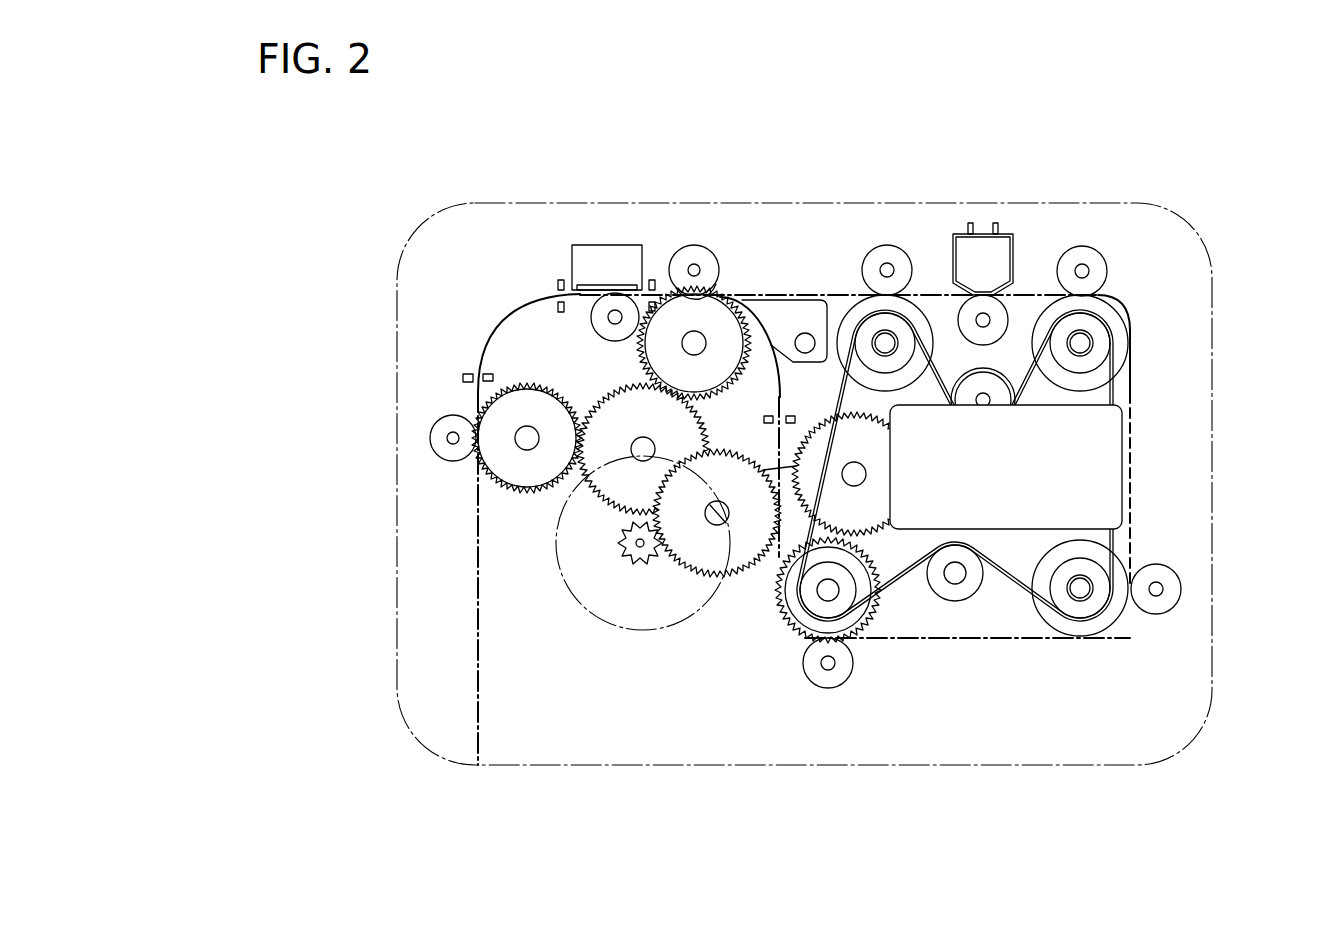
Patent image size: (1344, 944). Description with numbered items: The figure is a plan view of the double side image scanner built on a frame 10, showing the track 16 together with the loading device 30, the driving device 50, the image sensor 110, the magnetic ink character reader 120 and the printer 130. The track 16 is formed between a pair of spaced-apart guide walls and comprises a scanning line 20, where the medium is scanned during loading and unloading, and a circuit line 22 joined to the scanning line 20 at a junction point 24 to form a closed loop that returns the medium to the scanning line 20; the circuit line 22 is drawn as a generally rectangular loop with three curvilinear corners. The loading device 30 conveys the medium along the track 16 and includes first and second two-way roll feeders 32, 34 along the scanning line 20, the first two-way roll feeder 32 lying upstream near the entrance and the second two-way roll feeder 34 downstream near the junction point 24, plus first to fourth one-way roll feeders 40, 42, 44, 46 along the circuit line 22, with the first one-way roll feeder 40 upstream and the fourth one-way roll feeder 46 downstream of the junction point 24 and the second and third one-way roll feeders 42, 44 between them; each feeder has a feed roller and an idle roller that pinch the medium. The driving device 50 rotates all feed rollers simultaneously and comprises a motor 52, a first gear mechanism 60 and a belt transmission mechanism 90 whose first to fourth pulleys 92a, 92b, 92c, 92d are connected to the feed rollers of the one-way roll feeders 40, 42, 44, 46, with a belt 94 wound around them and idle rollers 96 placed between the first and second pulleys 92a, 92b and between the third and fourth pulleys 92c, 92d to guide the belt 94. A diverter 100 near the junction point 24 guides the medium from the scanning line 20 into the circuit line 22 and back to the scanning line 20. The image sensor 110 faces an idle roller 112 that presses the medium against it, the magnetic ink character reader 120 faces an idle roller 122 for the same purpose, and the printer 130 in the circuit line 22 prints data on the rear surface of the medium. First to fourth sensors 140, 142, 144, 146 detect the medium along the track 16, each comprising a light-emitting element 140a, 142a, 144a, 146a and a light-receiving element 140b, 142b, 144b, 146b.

The frame 10 is at (1080, 767).
The track 16 is at (474, 602).
The scanning line 20 is at (478, 560).
The circuit line 22 is at (1130, 498).
The junction point 24 is at (748, 312).
The loading device 30 is at (428, 433).
The first two-way roll feeder 32 is at (429, 445).
The second two-way roll feeder 34 is at (688, 243).
The first one-way roll feeder 40 is at (887, 244).
The second one-way roll feeder 42 is at (1087, 245).
The third one-way roll feeder 44 is at (1182, 588).
The fourth one-way roll feeder 46 is at (824, 692).
The driving device 50 is at (614, 632).
The motor 52 is at (648, 632).
The first gear mechanism 60 is at (472, 467).
The belt transmission mechanism 90 is at (1012, 592).
The first pulley 92a is at (877, 325).
The second pulley 92b is at (1103, 338).
The third pulley 92c is at (1092, 607).
The fourth pulley 92d is at (843, 603).
The belt 94 is at (1126, 392).
The idle rollers 96 is at (952, 593).
The diverter 100 is at (762, 297).
The image sensor 110 is at (590, 255).
The idle roller 112 is at (592, 316).
The magnetic ink character reader 120 is at (985, 245).
The idle roller 122 is at (988, 387).
The printer 130 is at (1093, 440).
The first sensor 140 is at (352, 367).
The light-emitting element 140a is at (466, 374).
The light-receiving element 140b is at (485, 380).
The second sensor 142 is at (416, 222).
The light-emitting element 142a is at (556, 285).
The light-receiving element 142b is at (556, 305).
The third sensor 144 is at (575, 183).
The light-emitting element 144a is at (652, 283).
The light-receiving element 144b is at (652, 304).
The fourth sensor 146 is at (829, 239).
The light-emitting element 146a is at (790, 416).
The light-receiving element 146b is at (768, 416).